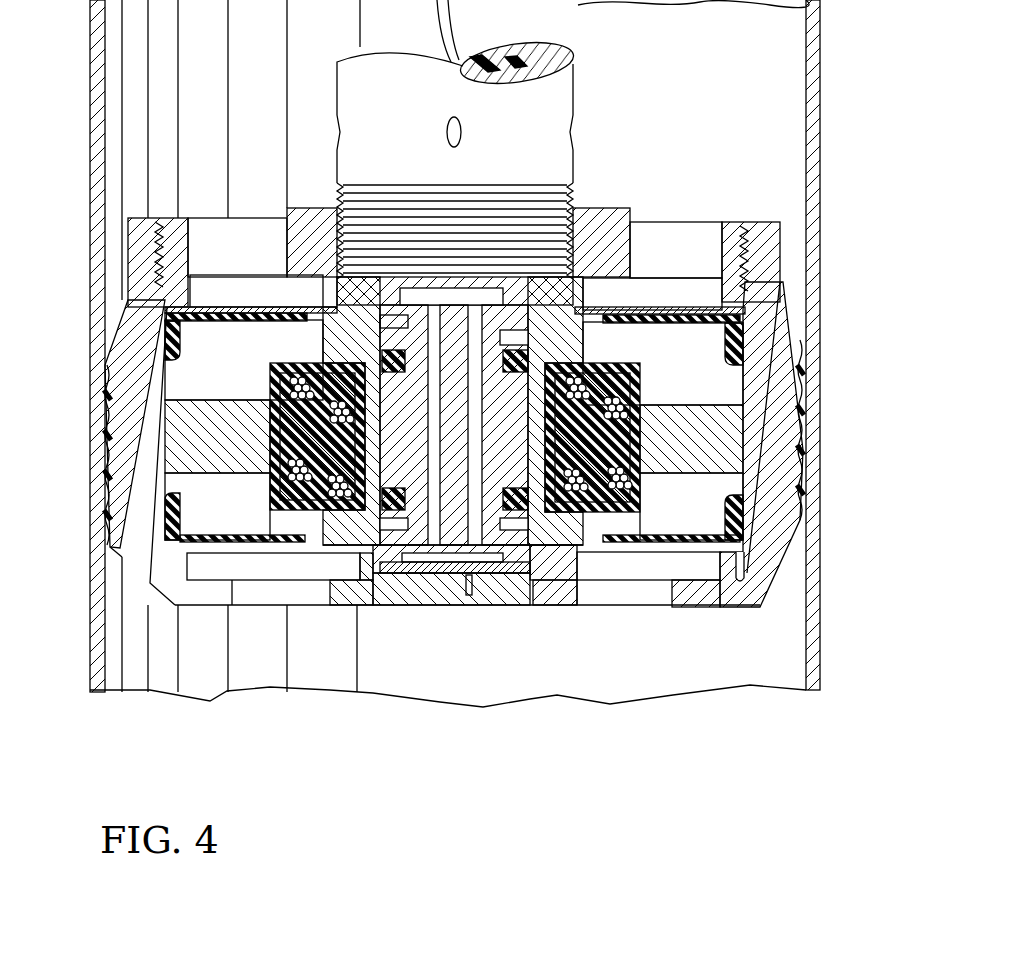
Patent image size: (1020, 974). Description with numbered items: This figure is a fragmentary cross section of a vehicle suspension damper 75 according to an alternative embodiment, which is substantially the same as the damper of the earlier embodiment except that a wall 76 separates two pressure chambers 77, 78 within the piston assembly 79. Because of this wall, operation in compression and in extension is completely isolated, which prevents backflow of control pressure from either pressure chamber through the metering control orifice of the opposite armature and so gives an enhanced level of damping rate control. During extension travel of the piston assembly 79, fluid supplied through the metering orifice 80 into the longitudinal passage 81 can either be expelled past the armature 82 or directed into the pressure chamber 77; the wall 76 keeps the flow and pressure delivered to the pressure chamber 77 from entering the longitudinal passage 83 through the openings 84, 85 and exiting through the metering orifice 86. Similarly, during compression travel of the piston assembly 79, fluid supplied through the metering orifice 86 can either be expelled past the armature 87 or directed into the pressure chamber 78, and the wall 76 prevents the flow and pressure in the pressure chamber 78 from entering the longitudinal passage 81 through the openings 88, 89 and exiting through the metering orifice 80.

The damper 75 is at (833, 177).
The wall 76 is at (717, 403).
The pressure chamber 77 is at (241, 376).
The pressure chamber 78 is at (241, 512).
The piston assembly 79 is at (128, 258).
The metering orifice 80 is at (432, 290).
The longitudinal passage 81 is at (431, 522).
The armature 82 is at (478, 562).
The longitudinal passage 83 is at (470, 522).
The opening 84 is at (522, 527).
The opening 85 is at (487, 562).
The metering orifice 86 is at (469, 595).
The armature 87 is at (456, 292).
The opening 88 is at (385, 325).
The opening 89 is at (388, 337).